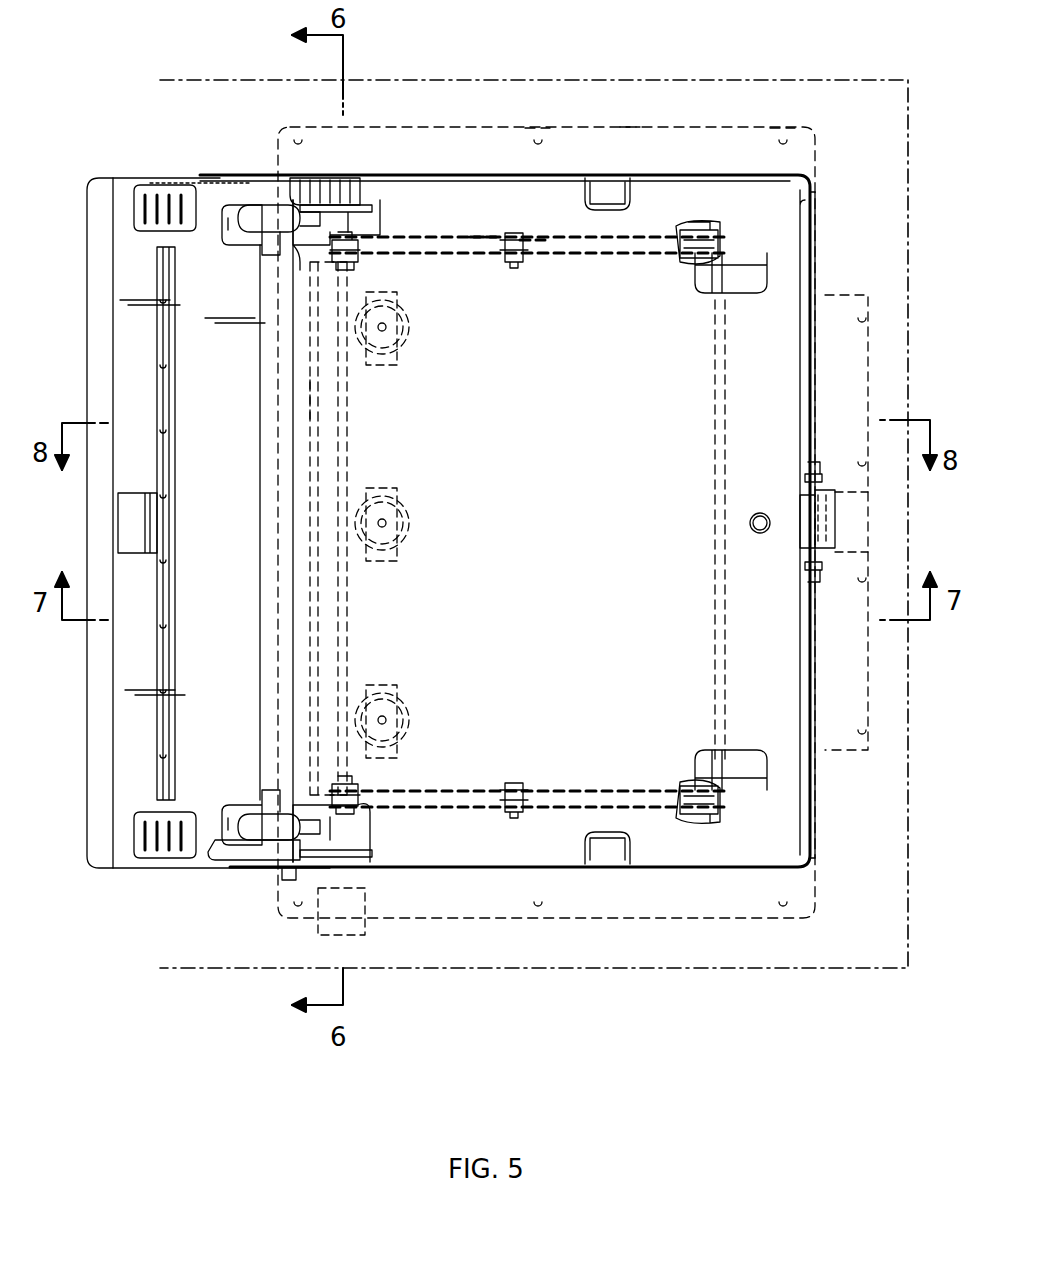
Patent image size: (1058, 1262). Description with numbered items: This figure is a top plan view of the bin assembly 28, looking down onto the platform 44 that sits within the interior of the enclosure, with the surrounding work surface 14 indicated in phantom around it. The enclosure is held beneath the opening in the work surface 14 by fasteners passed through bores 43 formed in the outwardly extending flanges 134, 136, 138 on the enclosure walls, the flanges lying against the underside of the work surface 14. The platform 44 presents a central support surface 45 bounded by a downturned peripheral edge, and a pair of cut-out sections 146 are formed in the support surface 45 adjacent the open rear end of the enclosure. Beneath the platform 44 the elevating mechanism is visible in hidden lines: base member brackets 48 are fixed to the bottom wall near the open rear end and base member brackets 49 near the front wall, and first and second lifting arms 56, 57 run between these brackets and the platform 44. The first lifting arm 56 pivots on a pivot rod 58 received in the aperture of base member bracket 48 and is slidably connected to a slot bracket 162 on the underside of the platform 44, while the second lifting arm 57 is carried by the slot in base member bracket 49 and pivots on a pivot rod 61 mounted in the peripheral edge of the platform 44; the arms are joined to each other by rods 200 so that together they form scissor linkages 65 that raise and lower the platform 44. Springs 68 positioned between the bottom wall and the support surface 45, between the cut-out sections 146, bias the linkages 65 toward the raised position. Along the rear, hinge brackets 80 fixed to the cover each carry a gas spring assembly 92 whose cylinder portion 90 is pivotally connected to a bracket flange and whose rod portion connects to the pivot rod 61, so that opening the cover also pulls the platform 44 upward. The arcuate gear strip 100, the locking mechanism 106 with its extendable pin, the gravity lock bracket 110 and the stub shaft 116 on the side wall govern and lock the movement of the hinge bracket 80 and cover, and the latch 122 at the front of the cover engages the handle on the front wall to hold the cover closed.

The work surface 14 is at (832, 95).
The bin assembly 28 is at (556, 895).
The bores 43 is at (538, 138).
The platform 44 is at (552, 208).
The central support surface 45 is at (495, 268).
The base member bracket 48 is at (398, 250).
The base member bracket 49 is at (672, 222).
The first lifting arm 56 is at (632, 262).
The second lifting arm 57 is at (592, 258).
The pivot rod 58 is at (350, 450).
The pivot rod 61 is at (310, 402).
The scissor linkage 65 is at (534, 770).
The springs 68 is at (400, 316).
The hinge bracket 80 is at (305, 183).
The cylinder portion 90 is at (270, 218).
The gas spring assembly 92 is at (279, 257).
The arcuate gear strip 100 is at (198, 182).
The locking mechanism 106 is at (355, 932).
The gravity lock bracket 110 is at (288, 875).
The stub shaft 116 is at (268, 876).
The latch 122 is at (138, 488).
The flange 134 is at (870, 335).
The flange 136 is at (700, 915).
The flange 138 is at (628, 135).
The cut-out sections 146 is at (376, 185).
The slot bracket 162 is at (740, 790).
The rods 200 is at (522, 260).